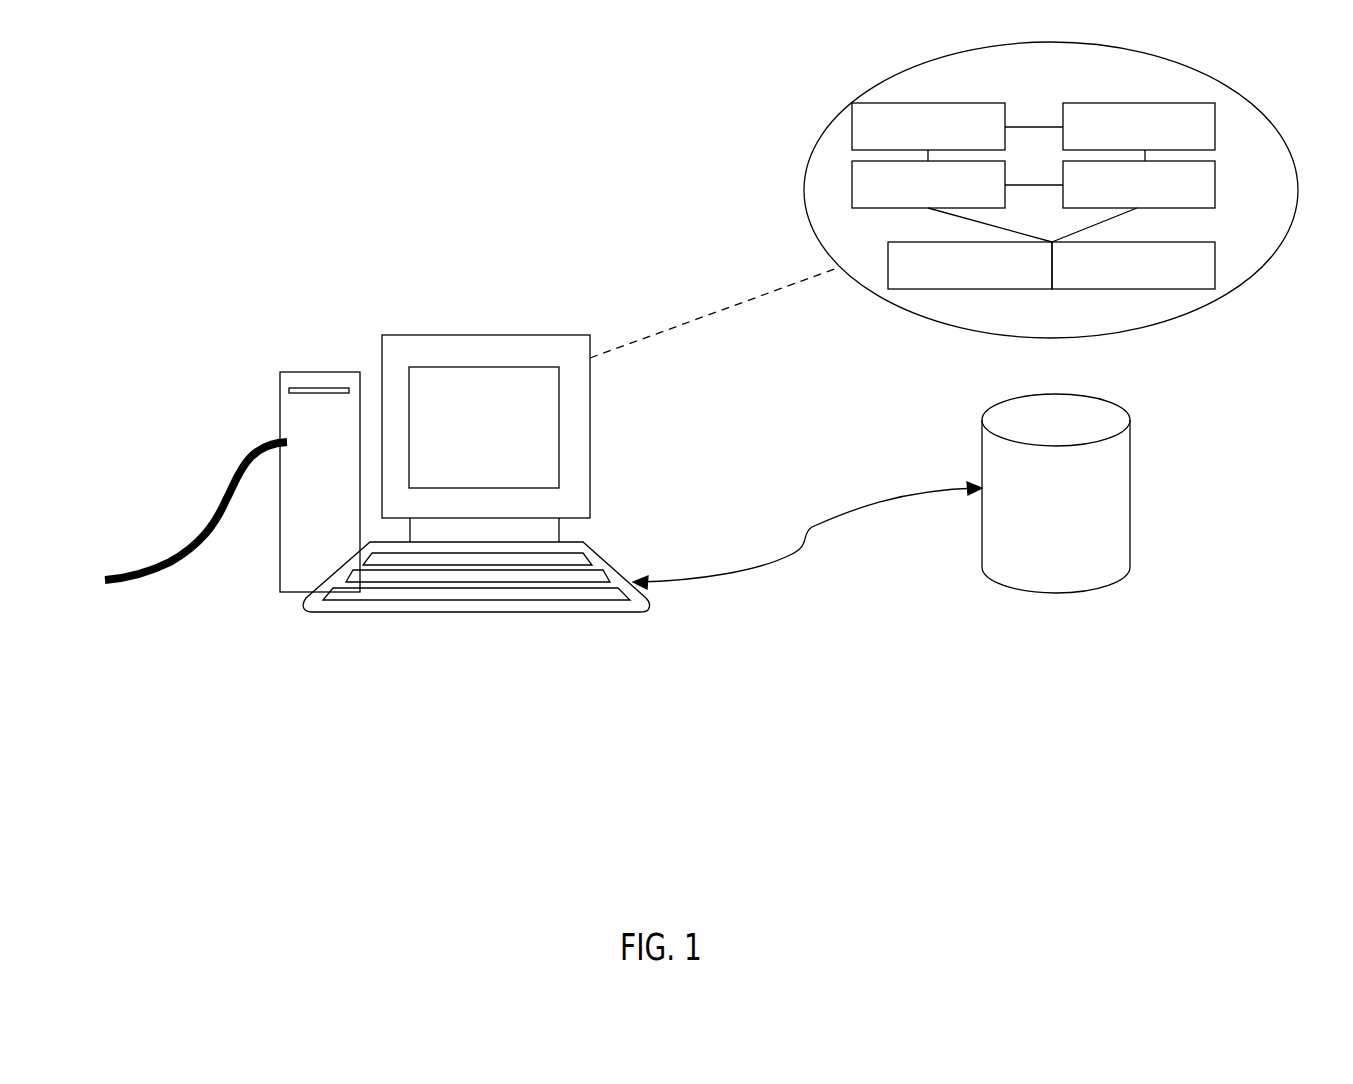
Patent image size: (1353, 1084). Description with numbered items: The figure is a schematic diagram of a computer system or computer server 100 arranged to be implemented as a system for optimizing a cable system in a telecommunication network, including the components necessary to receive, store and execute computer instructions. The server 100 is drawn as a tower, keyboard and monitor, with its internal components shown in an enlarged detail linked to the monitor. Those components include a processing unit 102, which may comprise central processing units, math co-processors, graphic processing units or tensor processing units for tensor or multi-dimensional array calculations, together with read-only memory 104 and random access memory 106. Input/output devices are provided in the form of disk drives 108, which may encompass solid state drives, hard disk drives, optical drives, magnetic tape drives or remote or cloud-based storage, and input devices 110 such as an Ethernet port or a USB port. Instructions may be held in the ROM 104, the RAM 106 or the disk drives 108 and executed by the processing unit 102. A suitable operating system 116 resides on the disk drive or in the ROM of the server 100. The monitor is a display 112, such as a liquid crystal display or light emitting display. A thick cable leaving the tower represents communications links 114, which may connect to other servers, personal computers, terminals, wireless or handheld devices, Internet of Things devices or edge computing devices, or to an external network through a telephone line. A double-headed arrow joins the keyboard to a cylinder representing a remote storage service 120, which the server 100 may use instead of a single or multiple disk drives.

The computer server 100 is at (465, 495).
The processing unit 102 is at (928, 126).
The read-only memory (ROM) 104 is at (1139, 126).
The random access memory (RAM) 106 is at (928, 184).
The disk drive 108 is at (1139, 184).
The input devices 110 is at (970, 265).
The display 112 is at (490, 324).
The communications links 114 is at (145, 583).
The operating system 116 is at (1133, 265).
The remote storage service 120 is at (1056, 493).